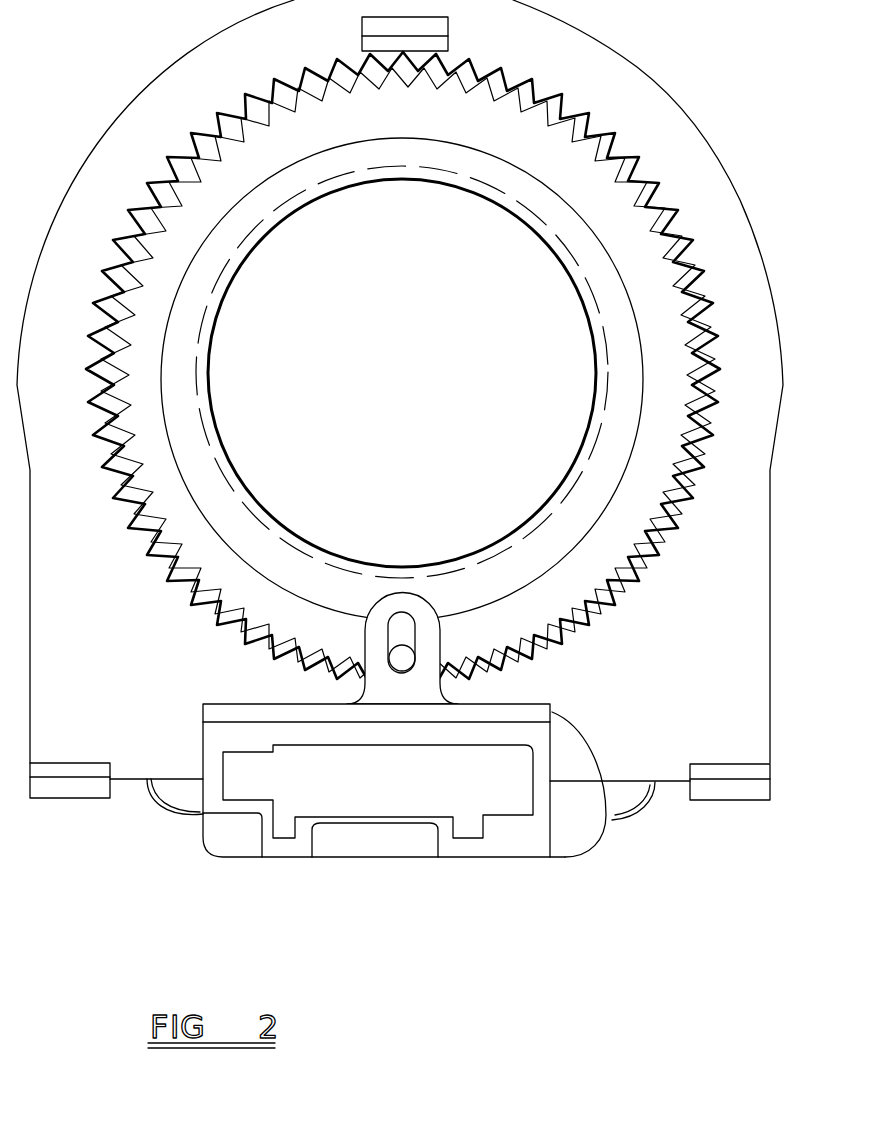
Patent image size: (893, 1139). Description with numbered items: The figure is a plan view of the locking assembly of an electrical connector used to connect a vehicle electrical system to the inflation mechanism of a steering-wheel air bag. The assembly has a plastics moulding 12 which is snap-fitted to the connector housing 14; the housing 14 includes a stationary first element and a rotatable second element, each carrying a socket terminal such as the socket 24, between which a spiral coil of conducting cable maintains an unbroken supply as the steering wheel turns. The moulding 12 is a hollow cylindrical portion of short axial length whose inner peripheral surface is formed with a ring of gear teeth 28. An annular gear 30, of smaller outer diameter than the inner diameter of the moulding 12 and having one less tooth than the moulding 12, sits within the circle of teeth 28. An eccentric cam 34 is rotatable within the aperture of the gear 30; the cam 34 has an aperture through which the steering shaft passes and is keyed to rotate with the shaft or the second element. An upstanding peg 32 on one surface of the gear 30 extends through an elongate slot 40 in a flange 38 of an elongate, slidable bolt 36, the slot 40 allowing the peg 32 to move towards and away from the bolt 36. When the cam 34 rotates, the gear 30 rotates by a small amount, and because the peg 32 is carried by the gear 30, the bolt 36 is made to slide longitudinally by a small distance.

The plastics moulding 12 is at (730, 245).
The housing 14 is at (575, 845).
The socket terminal 24 is at (288, 847).
The gear teeth 28 is at (710, 322).
The annular gear 30 is at (660, 442).
The upstanding peg 32 is at (412, 668).
The eccentric cam 34 is at (598, 495).
The slidable bolt 36 is at (605, 818).
The flange 38 is at (383, 690).
The elongate slot 40 is at (393, 630).